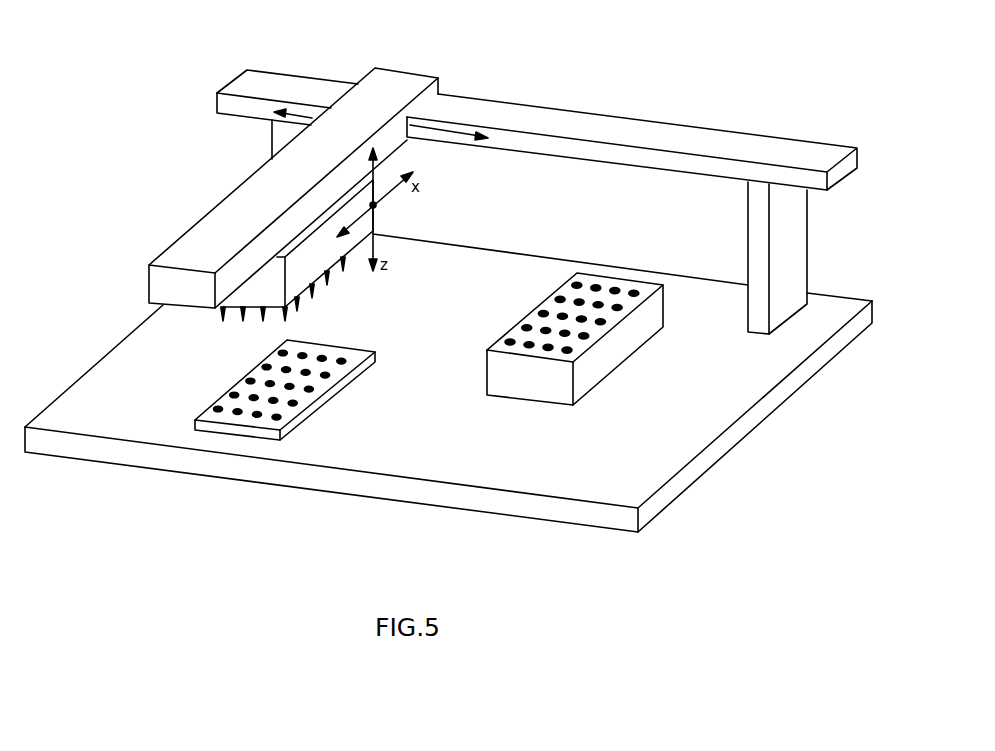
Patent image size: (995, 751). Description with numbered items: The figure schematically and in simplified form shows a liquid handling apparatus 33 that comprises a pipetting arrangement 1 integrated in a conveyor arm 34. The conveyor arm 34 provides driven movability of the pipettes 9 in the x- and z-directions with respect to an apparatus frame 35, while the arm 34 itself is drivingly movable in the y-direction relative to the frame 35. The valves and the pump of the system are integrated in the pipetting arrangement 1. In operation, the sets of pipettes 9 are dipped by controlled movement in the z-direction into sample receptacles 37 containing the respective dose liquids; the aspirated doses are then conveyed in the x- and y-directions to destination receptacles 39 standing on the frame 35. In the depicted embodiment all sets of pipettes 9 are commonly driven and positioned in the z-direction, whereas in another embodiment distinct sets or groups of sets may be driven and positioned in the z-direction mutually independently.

The pipetting arrangement 1 is at (268, 287).
The pipettes 9 is at (312, 298).
The liquid handling apparatus 33 is at (617, 71).
The conveyor arm 34 is at (243, 215).
The apparatus frame 35 is at (700, 463).
The sample receptacles 37 is at (300, 398).
The destination receptacles 39 is at (537, 322).